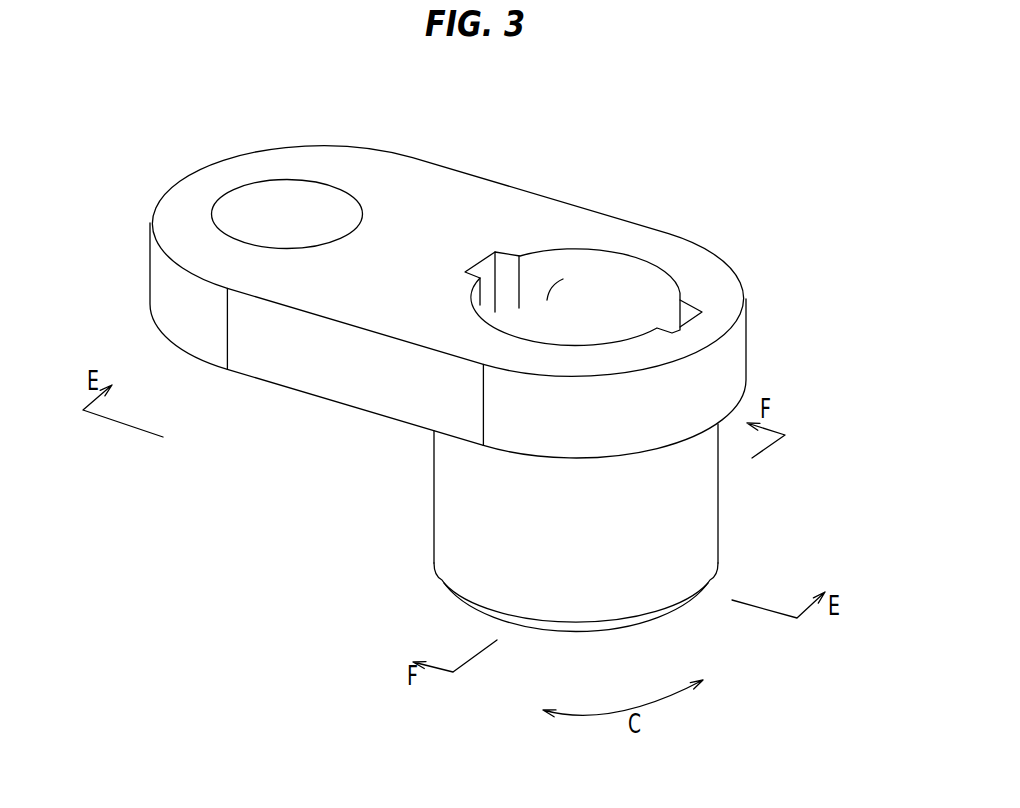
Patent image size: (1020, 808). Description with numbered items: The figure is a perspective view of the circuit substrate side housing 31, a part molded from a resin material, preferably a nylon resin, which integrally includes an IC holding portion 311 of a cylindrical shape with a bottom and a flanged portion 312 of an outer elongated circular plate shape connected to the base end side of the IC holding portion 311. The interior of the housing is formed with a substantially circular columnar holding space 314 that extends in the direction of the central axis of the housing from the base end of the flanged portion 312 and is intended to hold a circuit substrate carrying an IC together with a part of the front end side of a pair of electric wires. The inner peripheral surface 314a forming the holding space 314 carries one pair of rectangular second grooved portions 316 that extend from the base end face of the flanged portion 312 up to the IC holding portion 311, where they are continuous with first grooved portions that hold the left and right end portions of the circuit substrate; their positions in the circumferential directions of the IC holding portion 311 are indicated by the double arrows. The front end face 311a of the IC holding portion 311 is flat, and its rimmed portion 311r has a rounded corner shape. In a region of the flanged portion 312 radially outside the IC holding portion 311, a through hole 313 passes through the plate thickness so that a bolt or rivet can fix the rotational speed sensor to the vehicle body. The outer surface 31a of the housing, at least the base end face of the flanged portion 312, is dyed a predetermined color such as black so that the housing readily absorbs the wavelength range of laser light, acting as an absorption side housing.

The circuit substrate side housing 31 is at (729, 106).
The outer surface 31a is at (444, 182).
The IC holding portion 311 is at (718, 530).
The front end face 311a is at (585, 632).
The rimmed portion 311r is at (667, 610).
The flanged portion 312 is at (746, 362).
The through hole 313 is at (263, 189).
The holding space 314 is at (551, 329).
The inner peripheral surface 314a is at (548, 293).
The second grooved portions 316 is at (671, 302).